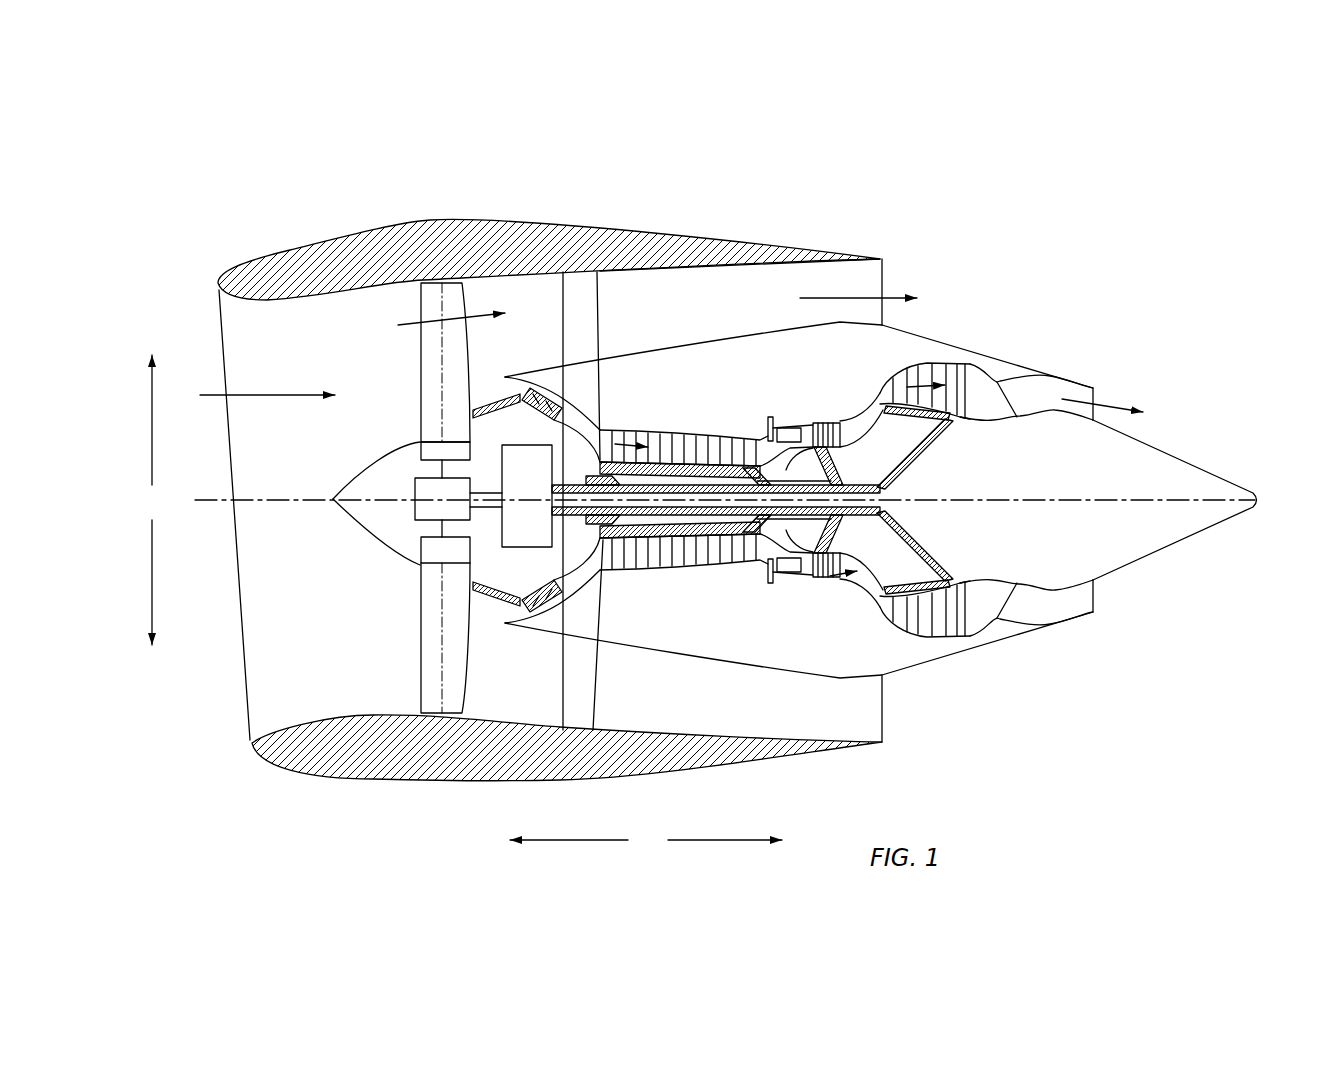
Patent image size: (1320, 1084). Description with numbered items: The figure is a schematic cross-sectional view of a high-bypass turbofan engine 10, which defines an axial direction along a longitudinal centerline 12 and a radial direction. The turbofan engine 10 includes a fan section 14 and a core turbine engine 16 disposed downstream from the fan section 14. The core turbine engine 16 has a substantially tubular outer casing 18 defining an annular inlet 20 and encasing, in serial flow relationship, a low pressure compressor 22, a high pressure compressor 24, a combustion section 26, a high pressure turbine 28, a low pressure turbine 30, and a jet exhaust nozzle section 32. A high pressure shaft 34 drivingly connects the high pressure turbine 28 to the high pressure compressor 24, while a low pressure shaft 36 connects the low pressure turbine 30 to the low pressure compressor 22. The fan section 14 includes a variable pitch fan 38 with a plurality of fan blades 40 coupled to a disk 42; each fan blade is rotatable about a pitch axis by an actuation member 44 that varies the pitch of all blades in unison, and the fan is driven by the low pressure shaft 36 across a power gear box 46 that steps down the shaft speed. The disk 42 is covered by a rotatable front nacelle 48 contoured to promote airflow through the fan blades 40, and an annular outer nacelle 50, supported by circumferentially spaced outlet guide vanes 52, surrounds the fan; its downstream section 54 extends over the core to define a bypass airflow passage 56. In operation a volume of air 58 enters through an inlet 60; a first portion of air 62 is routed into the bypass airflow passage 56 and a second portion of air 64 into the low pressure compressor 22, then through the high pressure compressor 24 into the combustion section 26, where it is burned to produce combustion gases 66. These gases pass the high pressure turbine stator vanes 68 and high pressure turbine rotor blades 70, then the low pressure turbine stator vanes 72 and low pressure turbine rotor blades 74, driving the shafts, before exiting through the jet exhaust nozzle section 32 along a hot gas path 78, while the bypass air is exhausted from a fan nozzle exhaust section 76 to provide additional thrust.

The turbofan engine 10 is at (1016, 232).
The longitudinal centerline 12 is at (1040, 497).
The fan section 14 is at (458, 188).
The core turbine engine 16 is at (710, 385).
The outer casing 18 is at (745, 668).
The annular inlet 20 is at (505, 608).
The low pressure compressor 22 is at (558, 578).
The high pressure compressor 24 is at (625, 555).
The combustion section 26 is at (785, 567).
The high pressure turbine 28 is at (880, 582).
The low pressure turbine 30 is at (960, 630).
The jet exhaust nozzle section 32 is at (1016, 616).
The high pressure shaft 34 is at (797, 467).
The low pressure shaft 36 is at (872, 476).
The variable pitch fan 38 is at (390, 553).
The fan blades 40 is at (419, 653).
The disk 42 is at (433, 452).
The actuation member 44 is at (420, 482).
The power gear box 46 is at (537, 455).
The front nacelle 48 is at (345, 515).
The outer nacelle 50 is at (462, 780).
The outlet guide vanes 52 is at (598, 302).
The downstream section 54 is at (830, 264).
The bypass airflow passage 56 is at (764, 311).
The volume of air 58 is at (268, 393).
The inlet 60 is at (245, 720).
The first portion of air 62 is at (428, 335).
The second portion of air 64 is at (497, 385).
The combustion gases 66 is at (917, 370).
The HP turbine stator vanes 68 is at (800, 574).
The HP turbine rotor blades 70 is at (815, 550).
The LP turbine stator vanes 72 is at (892, 612).
The LP turbine rotor blades 74 is at (897, 625).
The fan nozzle exhaust section 76 is at (870, 280).
The hot gas path 78 is at (861, 397).